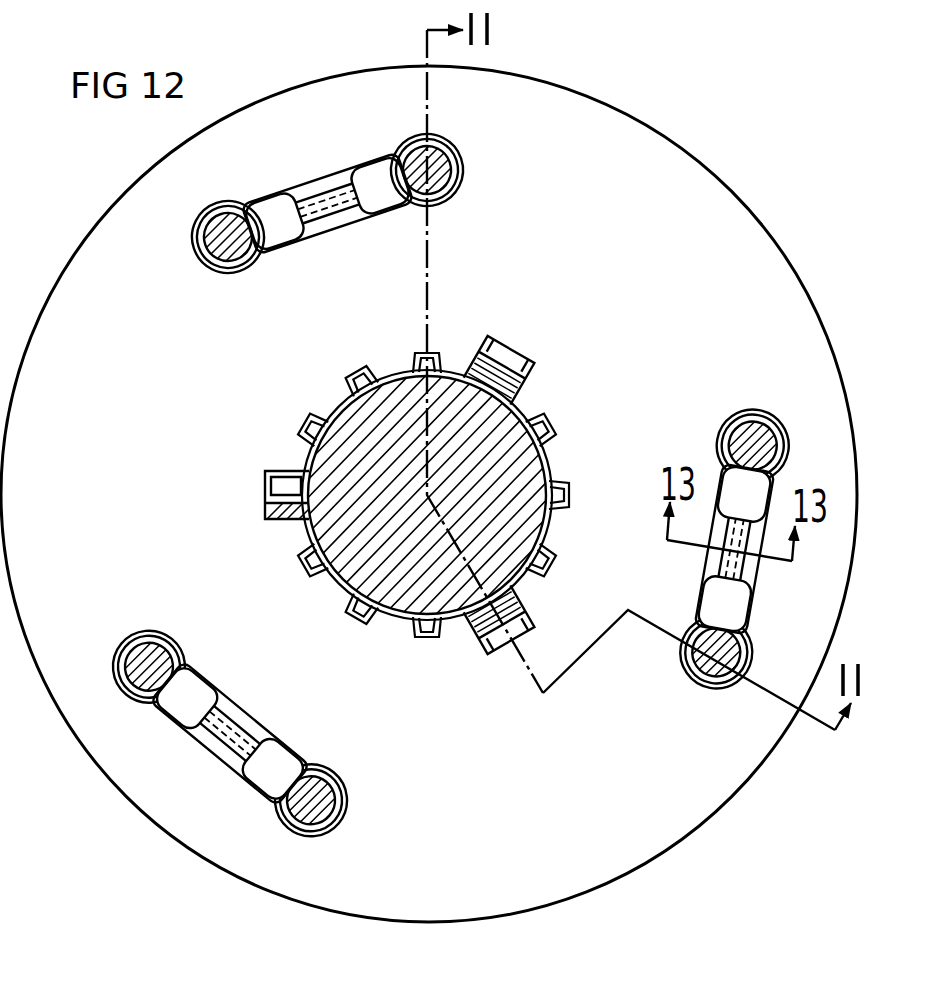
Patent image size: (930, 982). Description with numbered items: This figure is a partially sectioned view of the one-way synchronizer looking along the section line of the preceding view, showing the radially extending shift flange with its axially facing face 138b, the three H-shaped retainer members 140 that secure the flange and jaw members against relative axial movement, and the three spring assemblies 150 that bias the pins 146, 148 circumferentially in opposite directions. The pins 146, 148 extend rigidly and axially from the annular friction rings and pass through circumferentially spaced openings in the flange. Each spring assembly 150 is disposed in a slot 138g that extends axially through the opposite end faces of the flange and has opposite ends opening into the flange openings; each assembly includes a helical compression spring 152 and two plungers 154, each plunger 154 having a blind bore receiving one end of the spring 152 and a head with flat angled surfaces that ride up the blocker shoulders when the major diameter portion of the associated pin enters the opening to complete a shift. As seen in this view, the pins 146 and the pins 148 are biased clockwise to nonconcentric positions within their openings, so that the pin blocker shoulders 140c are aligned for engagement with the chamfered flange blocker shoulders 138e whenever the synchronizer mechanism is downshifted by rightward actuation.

The axially facing face of the shift flange 138b is at (665, 267).
The flange blocker shoulder 138e is at (142, 630).
The slot 138g is at (394, 396).
The H-shaped retainer member 140 is at (449, 473).
The pin blocker shoulder 140c is at (470, 368).
The pin 146 is at (452, 172).
The pin 148 is at (200, 249).
The spring assembly 150 is at (310, 244).
The spring 152 is at (343, 214).
The plunger 154 is at (366, 151).